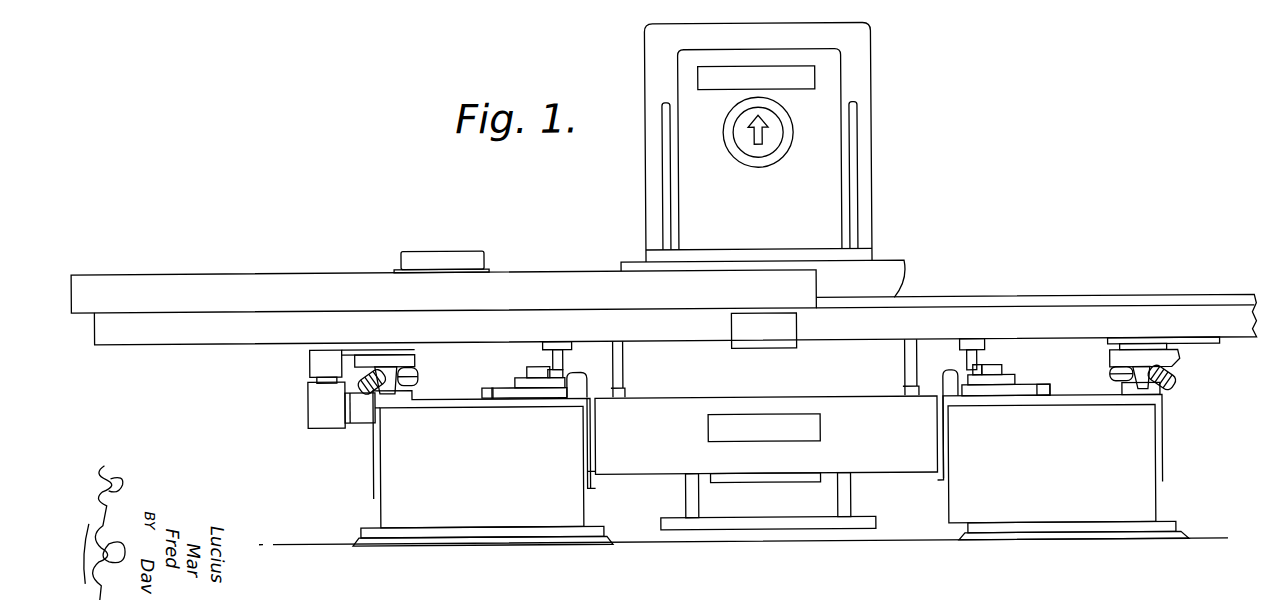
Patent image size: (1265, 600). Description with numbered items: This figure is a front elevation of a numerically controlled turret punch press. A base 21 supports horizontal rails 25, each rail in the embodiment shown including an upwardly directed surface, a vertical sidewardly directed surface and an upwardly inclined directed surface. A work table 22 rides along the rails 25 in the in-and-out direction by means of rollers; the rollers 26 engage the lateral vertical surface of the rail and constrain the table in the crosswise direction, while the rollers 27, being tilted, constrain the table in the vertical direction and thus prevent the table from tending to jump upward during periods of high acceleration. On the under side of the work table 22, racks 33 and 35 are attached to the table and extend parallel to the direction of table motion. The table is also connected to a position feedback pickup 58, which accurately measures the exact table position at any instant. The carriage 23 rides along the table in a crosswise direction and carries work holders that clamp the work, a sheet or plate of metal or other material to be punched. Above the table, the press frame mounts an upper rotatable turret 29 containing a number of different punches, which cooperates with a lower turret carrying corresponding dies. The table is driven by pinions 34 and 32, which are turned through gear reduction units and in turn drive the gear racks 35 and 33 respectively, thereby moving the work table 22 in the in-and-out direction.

The base 21 is at (1012, 508).
The work table 22 is at (1175, 318).
The carriage 23 is at (253, 259).
The horizontal rails 25 is at (392, 374).
The rollers 26 is at (417, 384).
The rollers 27 is at (358, 381).
The upper rotatable turret 29 is at (880, 287).
The pinion 32 is at (990, 372).
The rack 33 is at (978, 375).
The pinion 34 is at (540, 372).
The rack 35 is at (556, 375).
The position feedback pickup 58 is at (320, 386).